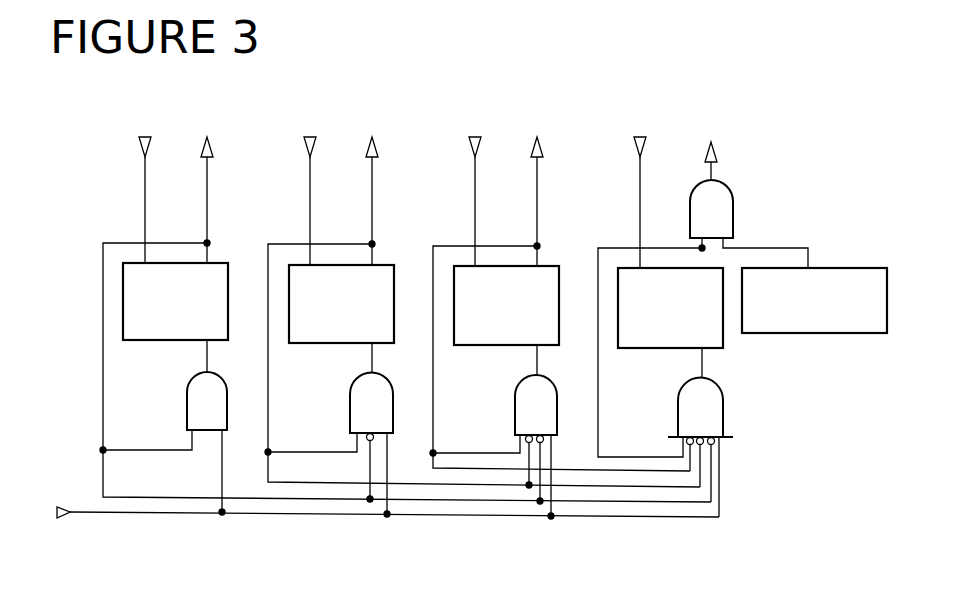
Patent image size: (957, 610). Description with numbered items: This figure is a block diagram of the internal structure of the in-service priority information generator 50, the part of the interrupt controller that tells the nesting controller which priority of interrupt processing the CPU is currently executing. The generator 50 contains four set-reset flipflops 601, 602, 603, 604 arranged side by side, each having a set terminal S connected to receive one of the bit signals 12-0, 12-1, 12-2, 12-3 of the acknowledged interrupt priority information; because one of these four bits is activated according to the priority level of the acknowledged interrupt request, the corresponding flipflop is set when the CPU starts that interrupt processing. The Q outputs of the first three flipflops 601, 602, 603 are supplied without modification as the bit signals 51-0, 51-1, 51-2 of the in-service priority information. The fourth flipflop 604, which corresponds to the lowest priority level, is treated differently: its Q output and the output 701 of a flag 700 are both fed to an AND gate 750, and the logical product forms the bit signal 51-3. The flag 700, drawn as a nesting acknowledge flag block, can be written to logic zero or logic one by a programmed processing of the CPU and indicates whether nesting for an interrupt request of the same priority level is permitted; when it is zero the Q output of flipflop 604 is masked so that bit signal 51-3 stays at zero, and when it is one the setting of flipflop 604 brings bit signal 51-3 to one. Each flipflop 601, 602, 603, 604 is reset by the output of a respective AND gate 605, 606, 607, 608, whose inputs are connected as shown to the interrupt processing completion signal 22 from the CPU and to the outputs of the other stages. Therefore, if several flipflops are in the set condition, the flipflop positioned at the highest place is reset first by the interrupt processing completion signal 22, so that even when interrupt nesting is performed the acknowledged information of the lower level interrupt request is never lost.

The bit signal 12-0 is at (143, 182).
The bit signal 12-1 is at (308, 183).
The bit signal 12-2 is at (473, 184).
The bit signal 12-3 is at (638, 185).
The bit signal 51-0 is at (212, 182).
The bit signal 51-1 is at (377, 183).
The bit signal 51-2 is at (542, 184).
The bit signal 51-3 is at (708, 141).
The interrupt processing completion signal 22 is at (58, 507).
The in-service priority information generator 50 is at (827, 482).
The set-reset flipflop 601 is at (152, 342).
The set-reset flipflop 602 is at (318, 345).
The set-reset flipflop 603 is at (483, 347).
The set-reset flipflop 604 is at (646, 350).
The AND gate 605 is at (187, 405).
The AND gate 606 is at (350, 407).
The AND gate 607 is at (515, 409).
The AND gate 608 is at (678, 412).
The flag 700 is at (810, 334).
The output of the flag 701 is at (766, 248).
The AND gate 750 is at (733, 193).